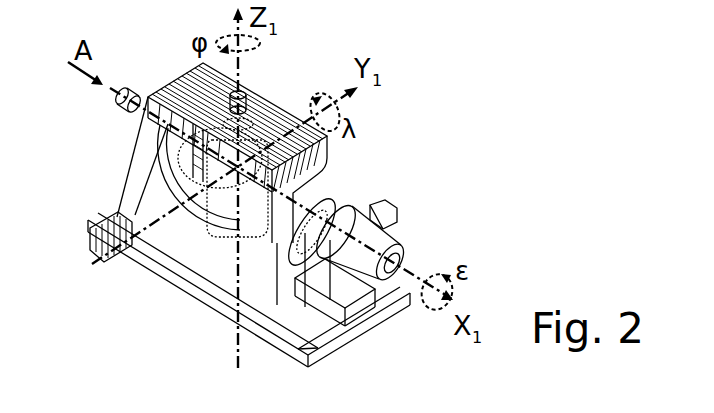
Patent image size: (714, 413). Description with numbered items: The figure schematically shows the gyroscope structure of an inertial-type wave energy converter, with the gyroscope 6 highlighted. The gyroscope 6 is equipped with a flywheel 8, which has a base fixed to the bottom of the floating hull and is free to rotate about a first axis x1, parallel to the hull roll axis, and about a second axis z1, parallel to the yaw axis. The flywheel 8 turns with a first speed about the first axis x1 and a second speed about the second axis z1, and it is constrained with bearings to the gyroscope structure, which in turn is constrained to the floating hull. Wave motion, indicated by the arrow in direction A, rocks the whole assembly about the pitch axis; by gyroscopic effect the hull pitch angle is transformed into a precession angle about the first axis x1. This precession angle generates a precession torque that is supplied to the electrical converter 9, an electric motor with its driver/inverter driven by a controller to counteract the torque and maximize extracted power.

The gyroscope 6 is at (282, 215).
The flywheel 8 is at (203, 220).
The electrical converter 9 is at (416, 236).